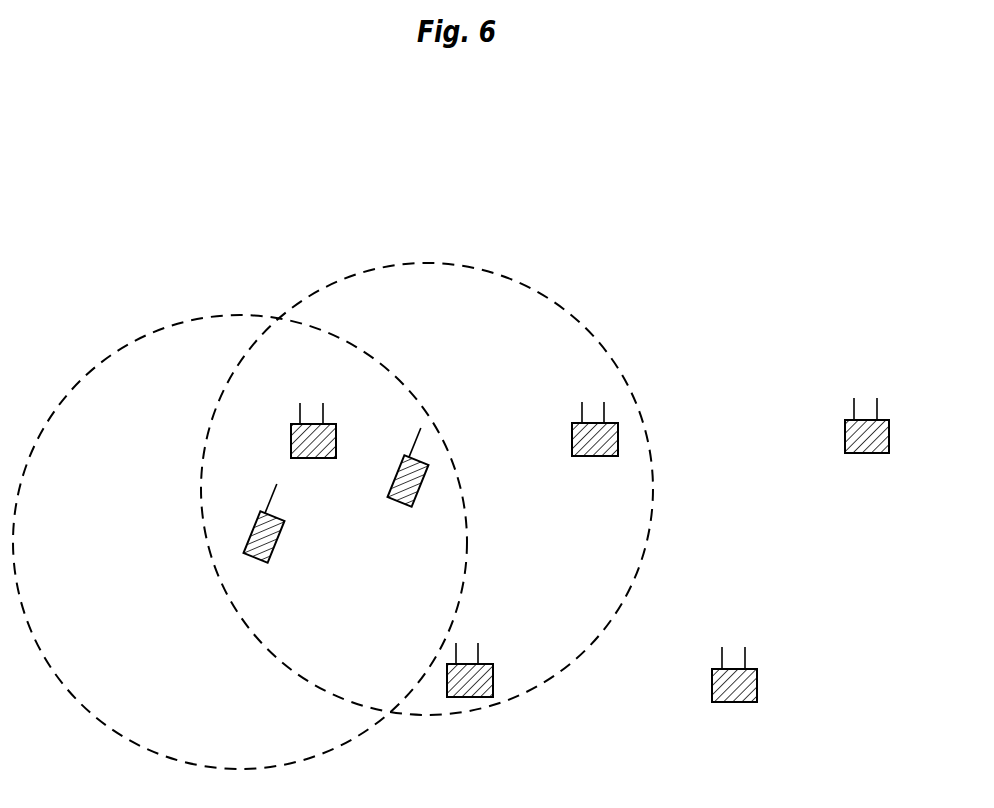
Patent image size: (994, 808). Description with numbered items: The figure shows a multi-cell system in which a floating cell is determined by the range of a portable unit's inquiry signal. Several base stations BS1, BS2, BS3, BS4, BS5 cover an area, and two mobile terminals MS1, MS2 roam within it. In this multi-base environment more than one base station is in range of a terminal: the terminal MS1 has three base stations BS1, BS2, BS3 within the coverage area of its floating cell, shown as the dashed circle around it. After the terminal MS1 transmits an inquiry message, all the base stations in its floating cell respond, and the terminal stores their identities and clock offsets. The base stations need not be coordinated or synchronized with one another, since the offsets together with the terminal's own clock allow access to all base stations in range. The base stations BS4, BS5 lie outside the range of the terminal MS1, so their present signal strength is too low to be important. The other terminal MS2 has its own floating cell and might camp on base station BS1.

The base station BS1 is at (315, 448).
The base station BS2 is at (593, 447).
The base station BS3 is at (468, 692).
The base station BS4 is at (733, 694).
The base station BS5 is at (868, 445).
The mobile terminal MS1 is at (411, 483).
The mobile terminal MS2 is at (268, 541).